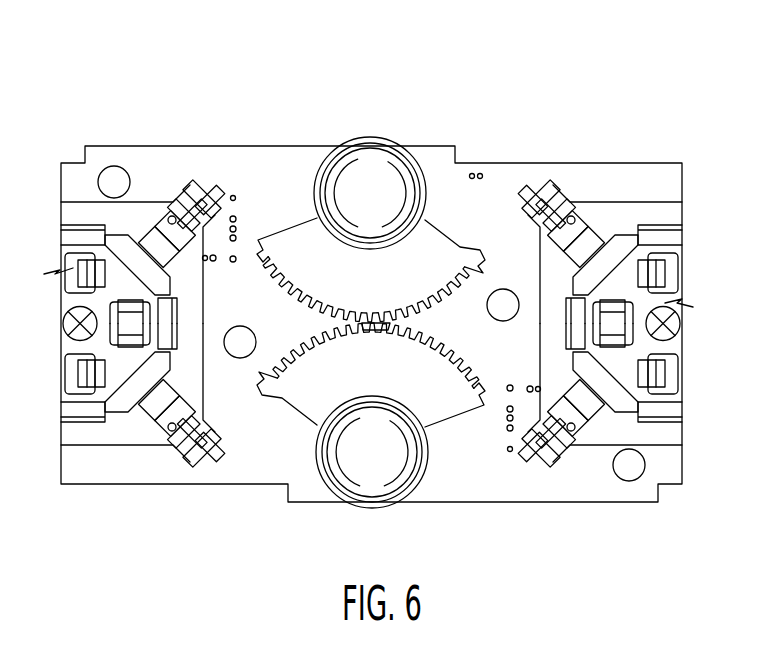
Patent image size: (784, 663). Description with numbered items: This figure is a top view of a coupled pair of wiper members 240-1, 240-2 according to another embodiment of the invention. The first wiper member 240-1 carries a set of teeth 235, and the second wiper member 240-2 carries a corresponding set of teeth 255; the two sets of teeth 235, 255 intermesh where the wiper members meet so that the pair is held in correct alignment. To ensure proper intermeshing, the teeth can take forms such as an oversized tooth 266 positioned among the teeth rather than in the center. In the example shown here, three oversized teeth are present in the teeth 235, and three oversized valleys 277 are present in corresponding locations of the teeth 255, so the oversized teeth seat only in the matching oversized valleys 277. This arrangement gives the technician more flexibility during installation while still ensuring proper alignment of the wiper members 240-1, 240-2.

The teeth 235 is at (413, 307).
The wiper member 240-1 is at (460, 247).
The wiper member 240-2 is at (436, 405).
The teeth 255 is at (457, 357).
The oversized tooth 266 is at (267, 268).
The oversized valleys 277 is at (373, 330).